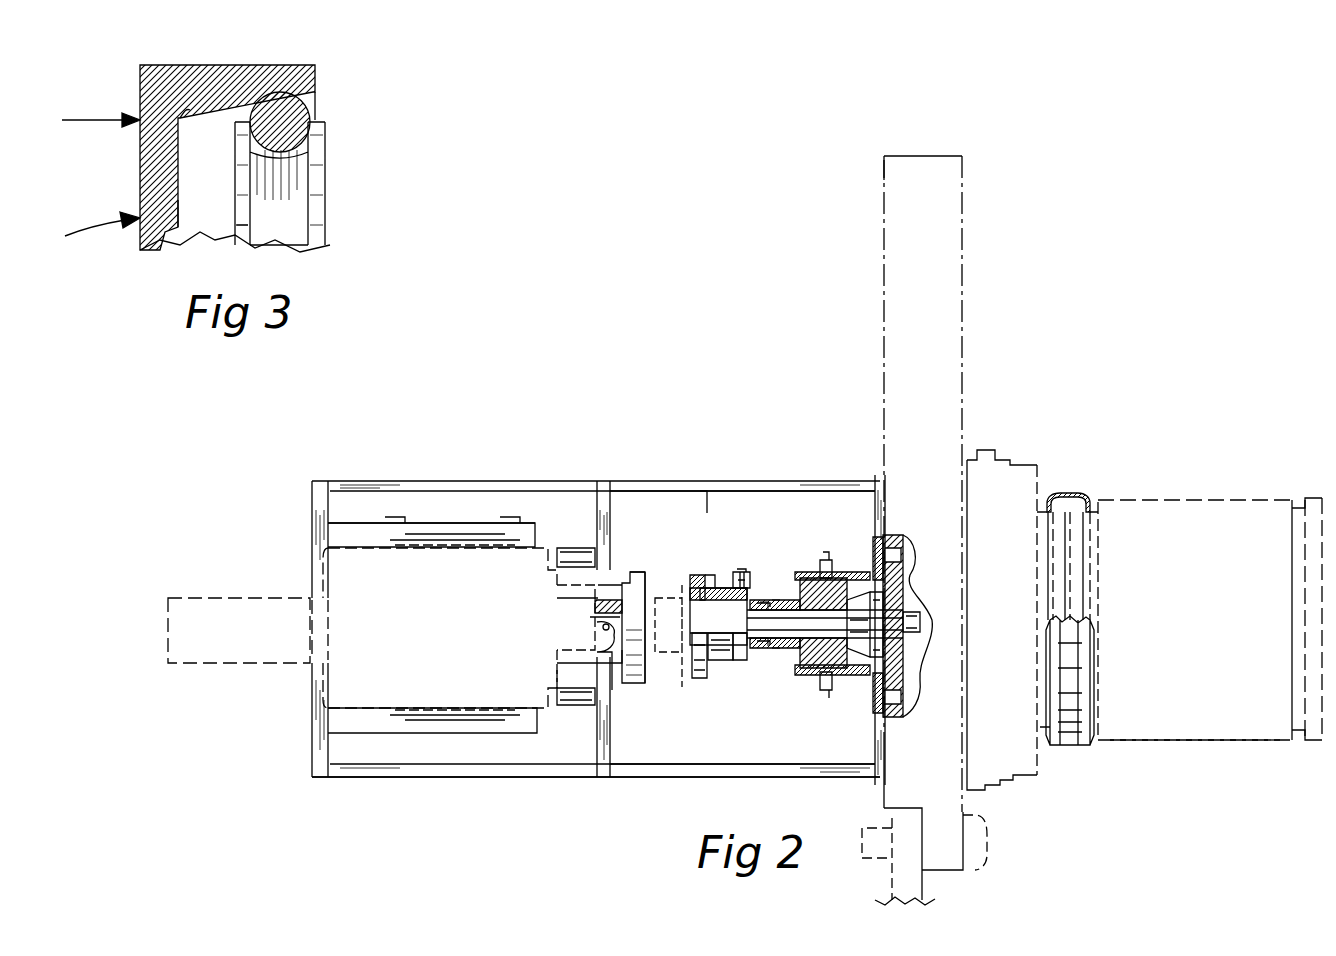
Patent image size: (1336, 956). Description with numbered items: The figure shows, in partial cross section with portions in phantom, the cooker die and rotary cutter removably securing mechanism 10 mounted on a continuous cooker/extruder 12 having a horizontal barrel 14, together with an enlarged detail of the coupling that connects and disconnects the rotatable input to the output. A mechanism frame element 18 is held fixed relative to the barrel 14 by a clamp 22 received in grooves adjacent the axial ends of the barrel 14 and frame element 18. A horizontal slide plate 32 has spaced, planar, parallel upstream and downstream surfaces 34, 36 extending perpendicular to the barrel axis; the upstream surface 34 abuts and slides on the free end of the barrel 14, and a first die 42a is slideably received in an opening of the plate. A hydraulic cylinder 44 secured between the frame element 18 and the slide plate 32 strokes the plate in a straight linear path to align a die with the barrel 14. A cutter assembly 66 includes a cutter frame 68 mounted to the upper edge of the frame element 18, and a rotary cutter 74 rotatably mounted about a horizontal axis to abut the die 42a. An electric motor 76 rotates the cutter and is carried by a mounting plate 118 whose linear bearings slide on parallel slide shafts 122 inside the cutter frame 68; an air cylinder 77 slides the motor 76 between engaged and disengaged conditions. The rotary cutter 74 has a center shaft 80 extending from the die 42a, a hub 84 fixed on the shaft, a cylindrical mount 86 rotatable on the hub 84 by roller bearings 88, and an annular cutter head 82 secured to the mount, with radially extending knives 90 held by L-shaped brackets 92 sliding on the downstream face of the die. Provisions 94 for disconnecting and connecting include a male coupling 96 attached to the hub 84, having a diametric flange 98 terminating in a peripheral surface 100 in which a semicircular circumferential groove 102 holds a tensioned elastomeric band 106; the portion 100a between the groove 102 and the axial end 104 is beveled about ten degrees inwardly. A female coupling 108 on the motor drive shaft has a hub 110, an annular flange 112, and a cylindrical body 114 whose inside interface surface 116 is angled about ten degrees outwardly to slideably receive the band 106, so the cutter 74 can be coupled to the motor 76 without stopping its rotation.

In FIG. 2, the mechanism 10 is at (770, 438).
In FIG. 2, the cooker/extruder 12 is at (1225, 495).
In FIG. 2, the barrel 14 is at (1228, 742).
In FIG. 2, the mechanism frame element 18 is at (1015, 462).
In FIG. 2, the clamp 22 is at (1065, 495).
In FIG. 2, the slide plate 32 is at (965, 135).
In FIG. 2, the upstream surface 34 is at (965, 172).
In FIG. 2, the downstream surface 36 is at (884, 183).
In FIG. 2, the first die 42a is at (918, 583).
In FIG. 2, the hydraulic cylinder 44 is at (922, 888).
In FIG. 2, the cutter assembly 66 is at (798, 495).
In FIG. 2, the cutter frame 68 is at (435, 778).
In FIG. 2, the rotary cutter 74 is at (770, 722).
In FIG. 2, the electric motor 76 is at (325, 710).
In FIG. 2, the air cylinder 77 is at (200, 598).
In FIG. 2, the center shaft 80 is at (920, 622).
In FIG. 2, the cutter head 82 is at (880, 650).
In FIG. 2, the hub 84 is at (780, 650).
In FIG. 2, the cylindrical mount 86 is at (775, 590).
In FIG. 2, the roller bearings 88 is at (772, 650).
In FIG. 2, the knives 90 is at (877, 548).
In FIG. 2, the L-shaped brackets 92 is at (850, 575).
In FIG. 2, the provisions for disconnecting and connecting 94 is at (706, 515).
In FIG. 3, the male coupling 96 is at (330, 215).
In FIG. 2, the male coupling 96 is at (720, 672).
In FIG. 2, the diametric flange 98 is at (692, 665).
In FIG. 3, the peripheral surface 100 is at (300, 243).
In FIG. 3, the beveled portion 100a is at (243, 220).
In FIG. 3, the circumferential groove 102 is at (276, 238).
In FIG. 3, the axial end 104 is at (233, 187).
In FIG. 2, the axial end 104 is at (692, 575).
In FIG. 3, the elastomeric band 106 is at (306, 108).
In FIG. 2, the elastomeric band 106 is at (698, 572).
In FIG. 3, the female coupling 108 is at (80, 238).
In FIG. 2, the female coupling 108 is at (648, 790).
In FIG. 2, the hub 110 is at (598, 645).
In FIG. 3, the annular flange 112 is at (140, 190).
In FIG. 2, the annular flange 112 is at (622, 583).
In FIG. 3, the cylindrical body 114 is at (176, 68).
In FIG. 2, the cylindrical body 114 is at (628, 562).
In FIG. 3, the inside interface surface 116 is at (178, 124).
In FIG. 2, the inside interface surface 116 is at (650, 572).
In FIG. 2, the mounting plate 118 is at (352, 528).
In FIG. 2, the slide shafts 122 is at (580, 548).